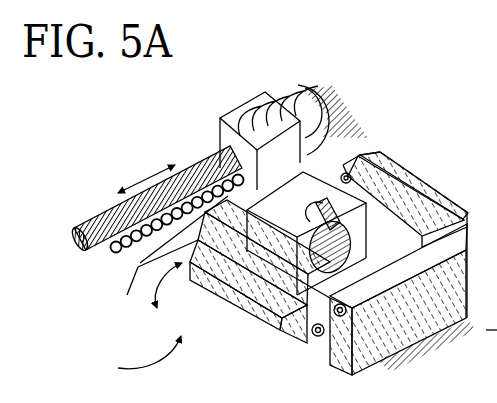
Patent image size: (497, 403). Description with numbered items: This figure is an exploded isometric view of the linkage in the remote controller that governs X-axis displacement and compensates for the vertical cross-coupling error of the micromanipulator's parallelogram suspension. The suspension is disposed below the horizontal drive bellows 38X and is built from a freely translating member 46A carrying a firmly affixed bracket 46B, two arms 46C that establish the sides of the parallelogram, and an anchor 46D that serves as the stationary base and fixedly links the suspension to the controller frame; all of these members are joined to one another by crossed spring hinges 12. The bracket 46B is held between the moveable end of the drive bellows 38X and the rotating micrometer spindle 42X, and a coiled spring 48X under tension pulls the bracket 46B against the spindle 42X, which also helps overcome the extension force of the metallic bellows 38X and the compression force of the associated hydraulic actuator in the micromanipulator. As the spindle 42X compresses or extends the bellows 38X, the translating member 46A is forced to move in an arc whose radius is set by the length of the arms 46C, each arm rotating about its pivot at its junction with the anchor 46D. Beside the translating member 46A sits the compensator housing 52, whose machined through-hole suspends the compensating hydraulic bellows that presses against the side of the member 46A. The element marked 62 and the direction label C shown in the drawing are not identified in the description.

The crossed spring hinges 12 is at (323, 338).
The horizontal drive bellows 38X is at (295, 105).
The micrometer spindle 42X is at (108, 216).
The translating member 46A is at (140, 268).
The bracket 46B is at (208, 136).
The arms 46C is at (427, 203).
The anchor 46D is at (397, 335).
The coiled spring 48X is at (110, 253).
The compensator housing 52 is at (318, 190).
The guide member 62 is at (487, 314).
The direction C is at (124, 363).